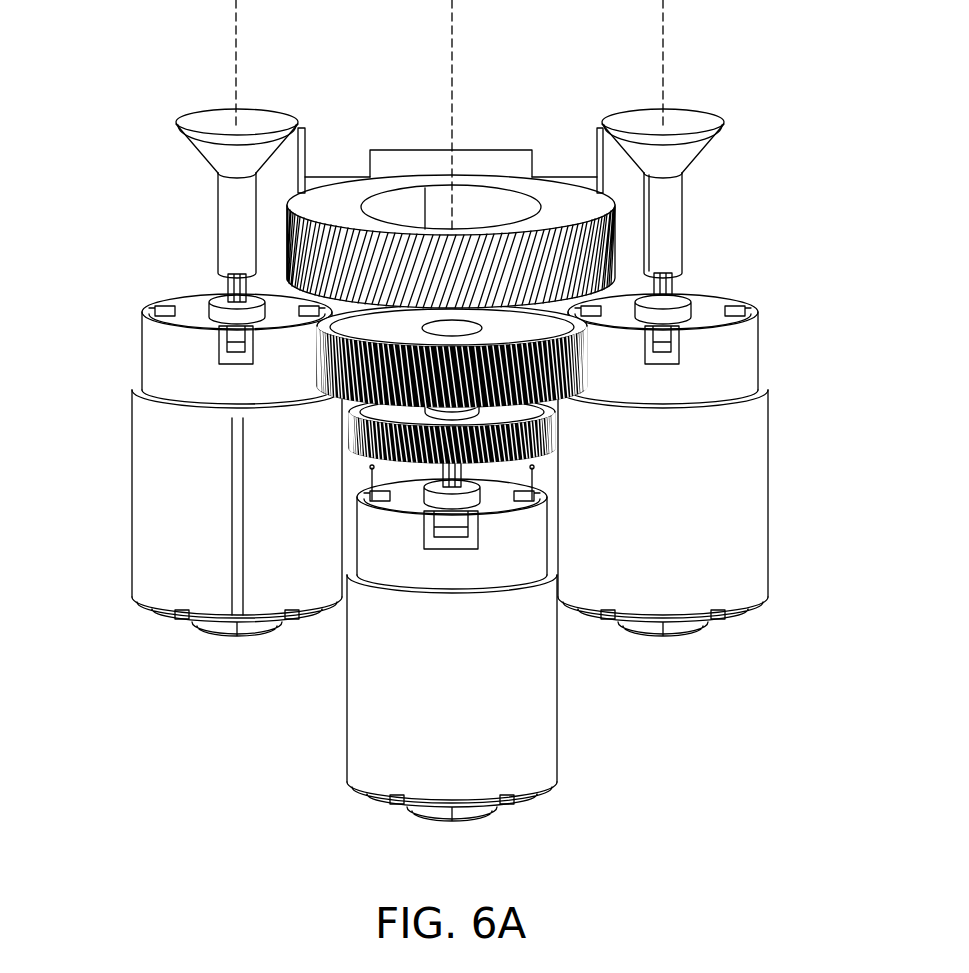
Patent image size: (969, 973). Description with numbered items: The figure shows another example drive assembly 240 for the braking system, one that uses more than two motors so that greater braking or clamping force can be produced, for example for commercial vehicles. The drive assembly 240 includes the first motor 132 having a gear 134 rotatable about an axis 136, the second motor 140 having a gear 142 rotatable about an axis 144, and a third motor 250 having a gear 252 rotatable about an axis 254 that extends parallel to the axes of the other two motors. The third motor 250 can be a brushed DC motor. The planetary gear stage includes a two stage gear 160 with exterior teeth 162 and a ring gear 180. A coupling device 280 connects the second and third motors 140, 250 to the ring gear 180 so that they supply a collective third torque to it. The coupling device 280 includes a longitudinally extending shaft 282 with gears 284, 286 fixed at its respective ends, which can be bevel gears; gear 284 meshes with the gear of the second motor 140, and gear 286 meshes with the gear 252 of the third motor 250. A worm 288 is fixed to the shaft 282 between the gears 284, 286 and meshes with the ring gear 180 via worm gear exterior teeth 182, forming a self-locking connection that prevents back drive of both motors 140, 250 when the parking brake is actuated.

The drive assembly 240 is at (138, 82).
The axis 254 is at (236, 64).
The gear 286 is at (298, 136).
The gear 252 is at (176, 133).
The shaft 282 is at (341, 177).
The axis 136 is at (451, 42).
The coupling device 280 is at (430, 149).
The worm 288 is at (488, 157).
The ring gear 180 is at (560, 191).
The axis 144 is at (662, 64).
The gear 142 is at (705, 152).
The gear 284 is at (622, 182).
The worm gear exterior teeth 182 is at (613, 266).
The exterior teeth 162 is at (205, 332).
The two stage gear 160 is at (587, 355).
The second motor 140 is at (767, 442).
The gear 134 is at (558, 432).
The third motor 250 is at (189, 507).
The first motor 132 is at (530, 675).